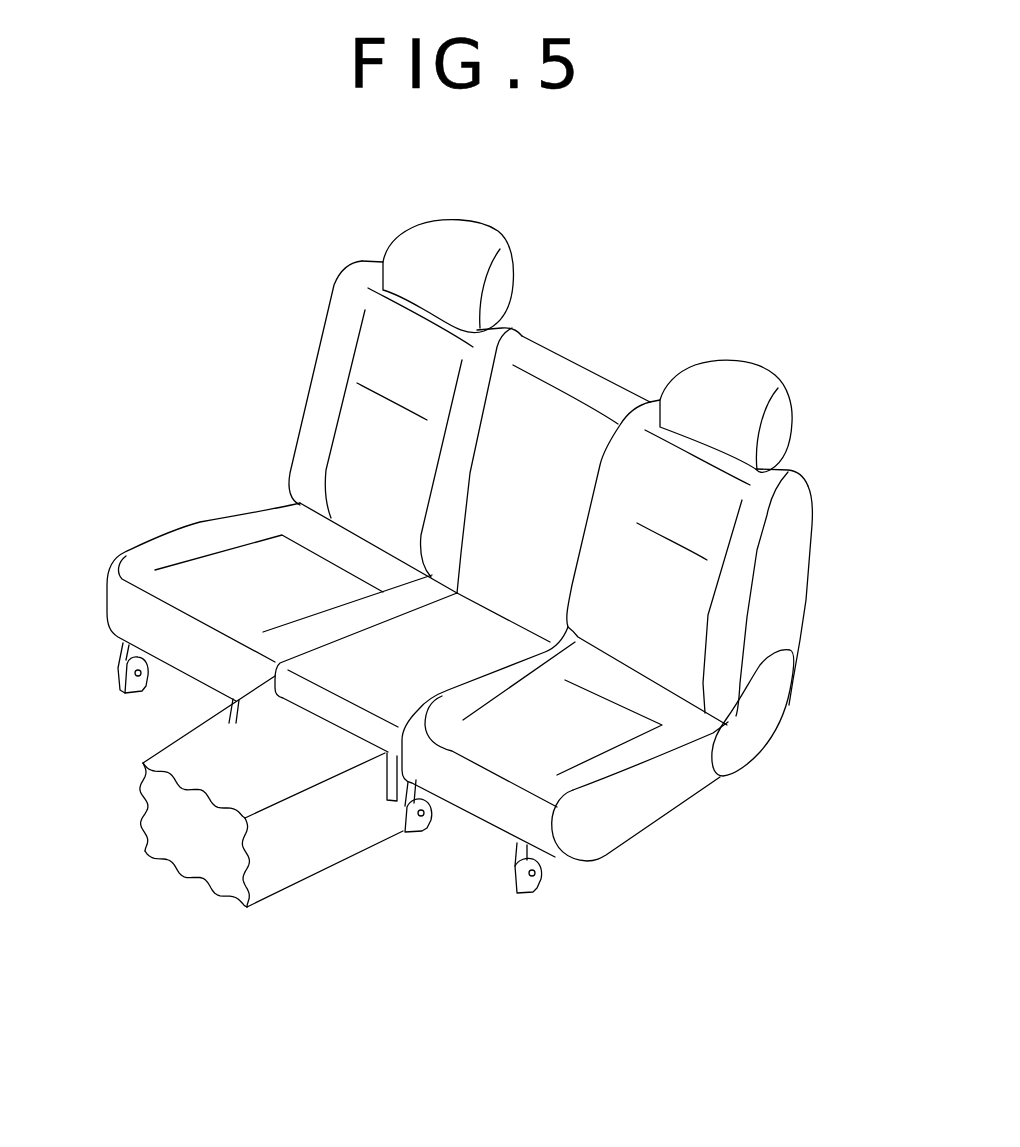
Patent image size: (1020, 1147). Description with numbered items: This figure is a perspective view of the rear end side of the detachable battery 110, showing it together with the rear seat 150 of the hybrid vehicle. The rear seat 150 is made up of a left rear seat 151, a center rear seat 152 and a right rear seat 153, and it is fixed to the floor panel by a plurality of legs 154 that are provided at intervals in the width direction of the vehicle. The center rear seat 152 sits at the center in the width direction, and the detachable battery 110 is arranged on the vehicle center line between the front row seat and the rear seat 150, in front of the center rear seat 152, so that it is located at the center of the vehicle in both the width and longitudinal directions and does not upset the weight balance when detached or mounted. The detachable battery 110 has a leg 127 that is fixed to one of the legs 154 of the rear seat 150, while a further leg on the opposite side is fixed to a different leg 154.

The rear seat 150 is at (675, 269).
The left rear seat 151 is at (790, 593).
The center rear seat 152 is at (582, 360).
The right rear seat 153 is at (367, 272).
The legs 154 is at (540, 912).
The detachable battery 110 is at (303, 860).
The leg 127 is at (393, 828).